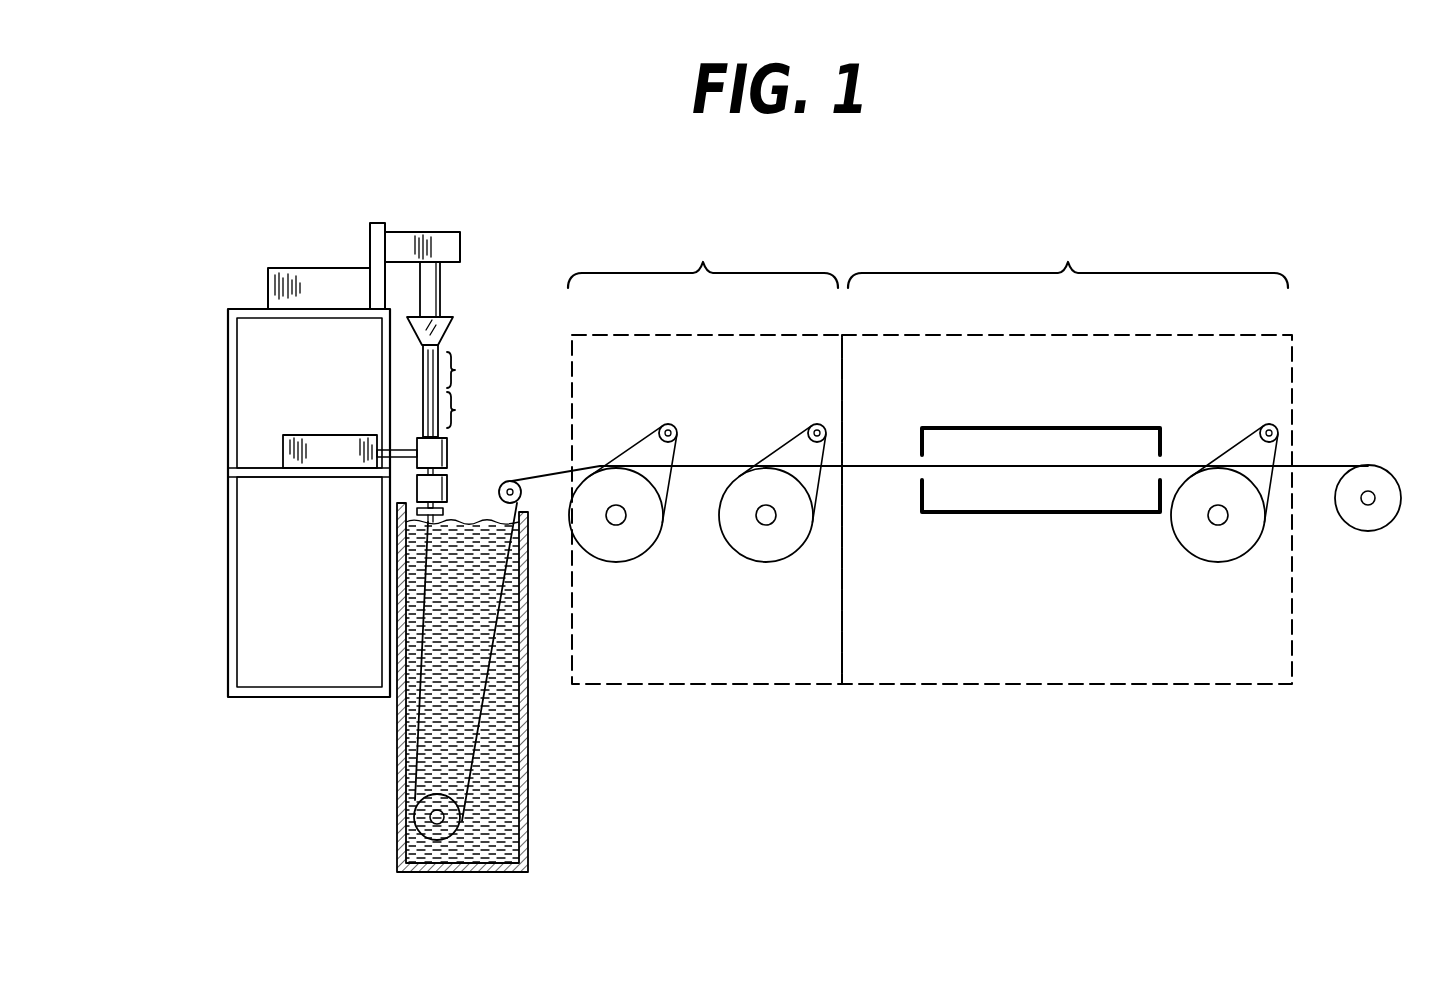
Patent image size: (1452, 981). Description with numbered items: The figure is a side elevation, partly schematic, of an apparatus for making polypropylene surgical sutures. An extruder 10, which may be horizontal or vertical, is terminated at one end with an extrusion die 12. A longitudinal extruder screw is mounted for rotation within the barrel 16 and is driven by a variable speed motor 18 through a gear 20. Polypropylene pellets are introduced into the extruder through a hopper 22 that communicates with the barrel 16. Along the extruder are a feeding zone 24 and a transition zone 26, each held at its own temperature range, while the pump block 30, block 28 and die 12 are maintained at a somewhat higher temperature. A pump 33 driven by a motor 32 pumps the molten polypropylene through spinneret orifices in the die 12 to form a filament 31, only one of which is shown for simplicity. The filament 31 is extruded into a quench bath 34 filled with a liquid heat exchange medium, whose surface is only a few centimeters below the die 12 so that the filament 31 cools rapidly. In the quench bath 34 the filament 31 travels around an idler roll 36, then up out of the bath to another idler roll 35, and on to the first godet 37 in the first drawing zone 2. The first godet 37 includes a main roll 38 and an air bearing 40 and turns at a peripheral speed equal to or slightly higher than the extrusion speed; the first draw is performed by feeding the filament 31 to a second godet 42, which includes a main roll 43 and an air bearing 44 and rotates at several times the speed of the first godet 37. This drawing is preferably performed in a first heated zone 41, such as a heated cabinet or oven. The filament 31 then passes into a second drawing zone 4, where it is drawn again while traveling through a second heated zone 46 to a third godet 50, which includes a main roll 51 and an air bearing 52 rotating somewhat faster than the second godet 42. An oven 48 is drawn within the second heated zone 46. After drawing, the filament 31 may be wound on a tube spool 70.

The first drawing zone 2 is at (703, 258).
The second drawing zone 4 is at (1068, 258).
The extruder 10 is at (408, 402).
The extrusion die 12 is at (453, 505).
The barrel 16 is at (422, 367).
The variable speed motor 18 is at (312, 268).
The gear 20 is at (463, 245).
The hopper 22 is at (455, 323).
The feeding zone 24 is at (471, 370).
The transition zone 26 is at (471, 410).
The block 28 is at (417, 487).
The pump block 30 is at (417, 464).
The filament 31 is at (550, 473).
The motor 32 is at (297, 435).
The pump 33 is at (398, 442).
The quench bath 34 is at (530, 770).
The idler roll 35 is at (522, 503).
The idler roll 36 is at (445, 830).
The first godet 37 is at (656, 574).
The main roll 38 is at (618, 550).
The air bearing 40 is at (676, 428).
The first heated zone 41 is at (764, 690).
The second godet 42 is at (803, 582).
The main roll 43 is at (758, 550).
The air bearing 44 is at (812, 424).
The second heated zone 46 is at (1207, 690).
The oven 48 is at (1046, 427).
The third godet 50 is at (1170, 560).
The main roll 51 is at (1222, 550).
The air bearing 52 is at (1265, 422).
The tube spool 70 is at (1375, 520).